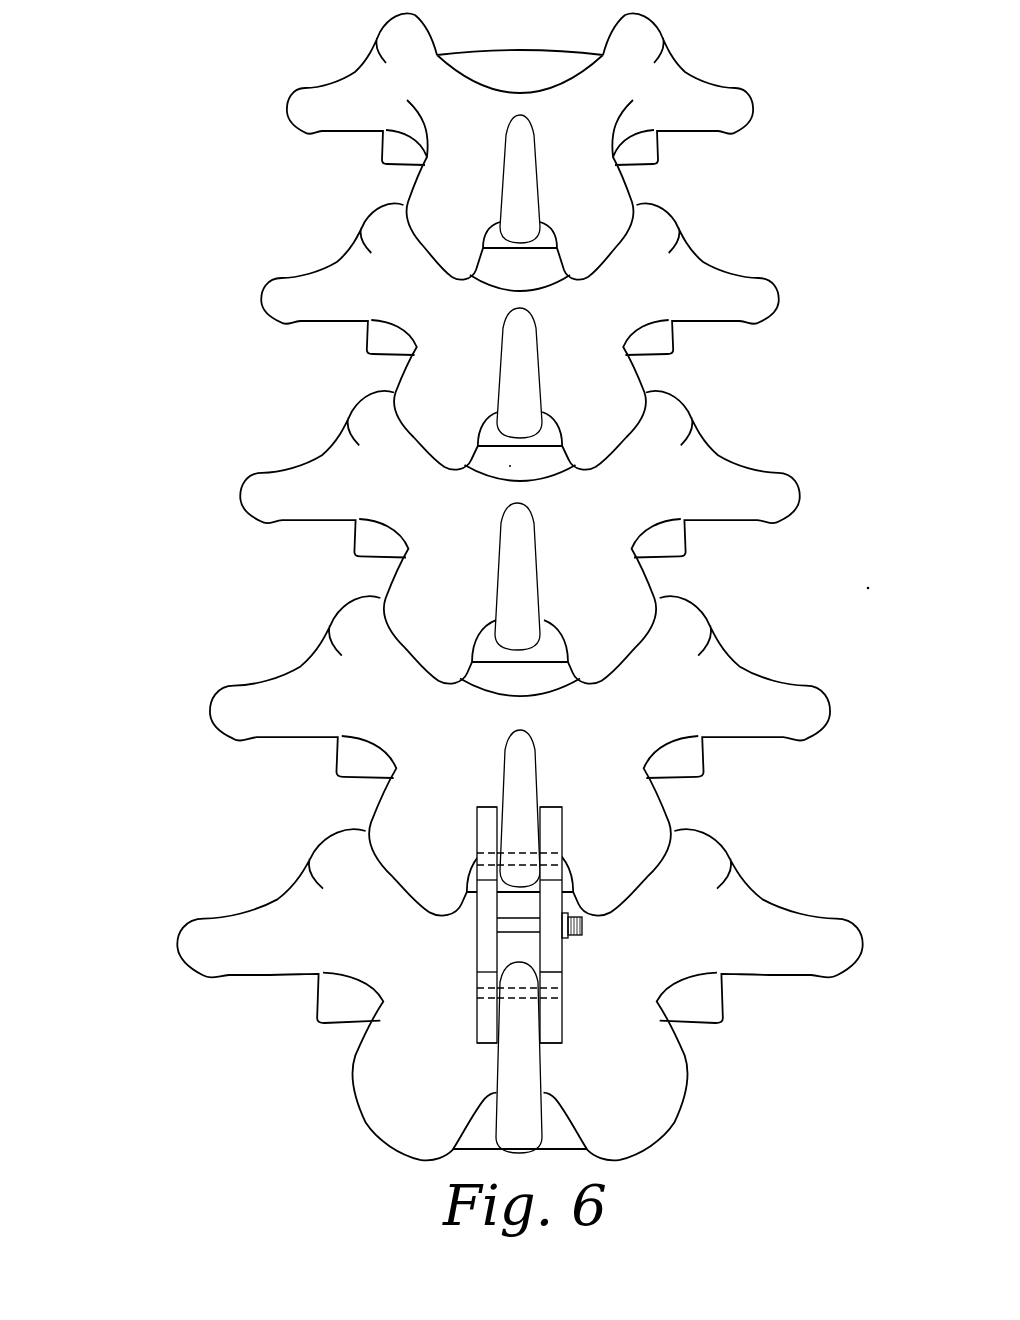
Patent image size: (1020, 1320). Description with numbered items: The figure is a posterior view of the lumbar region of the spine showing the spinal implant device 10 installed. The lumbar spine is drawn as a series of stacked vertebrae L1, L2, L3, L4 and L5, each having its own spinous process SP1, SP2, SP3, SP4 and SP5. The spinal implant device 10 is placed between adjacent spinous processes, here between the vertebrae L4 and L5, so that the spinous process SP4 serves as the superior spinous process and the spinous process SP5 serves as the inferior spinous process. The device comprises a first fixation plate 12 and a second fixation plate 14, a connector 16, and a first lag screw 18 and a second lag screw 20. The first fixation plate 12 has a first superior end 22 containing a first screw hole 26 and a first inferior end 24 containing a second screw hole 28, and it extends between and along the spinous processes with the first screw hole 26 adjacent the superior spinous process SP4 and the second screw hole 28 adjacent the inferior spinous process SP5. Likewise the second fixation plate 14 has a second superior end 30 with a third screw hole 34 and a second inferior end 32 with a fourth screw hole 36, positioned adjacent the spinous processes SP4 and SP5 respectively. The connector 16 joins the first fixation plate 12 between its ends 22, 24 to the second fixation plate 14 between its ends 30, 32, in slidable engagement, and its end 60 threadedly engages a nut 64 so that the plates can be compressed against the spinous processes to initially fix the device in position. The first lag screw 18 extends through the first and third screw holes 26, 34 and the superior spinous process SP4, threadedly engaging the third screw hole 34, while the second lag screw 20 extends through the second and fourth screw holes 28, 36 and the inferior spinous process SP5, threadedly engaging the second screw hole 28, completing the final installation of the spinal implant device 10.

The spinal implant device 10 is at (515, 939).
The first fixation plate 12 is at (554, 842).
The second fixation plate 14 is at (477, 840).
The connector 16 is at (527, 934).
The first lag screw 18 is at (522, 860).
The second lag screw 20 is at (475, 991).
The first superior end 22 is at (558, 814).
The first inferior end 24 is at (558, 1038).
The first screw hole 26 is at (580, 859).
The second screw hole 28 is at (581, 1004).
The second superior end 30 is at (477, 814).
The second inferior end 32 is at (478, 1043).
The third screw hole 34 is at (460, 853).
The fourth screw hole 36 is at (458, 1008).
The end of the connector 60 is at (583, 925).
The nut 64 is at (567, 934).
The vertebra L1 is at (140, 112).
The vertebra L2 is at (140, 300).
The vertebra L3 is at (140, 495).
The vertebra L4 is at (140, 710).
The vertebra L5 is at (140, 945).
The spinous process SP1 is at (518, 198).
The spinous process SP2 is at (528, 388).
The spinous process SP3 is at (530, 593).
The superior spinous process SP4 is at (512, 767).
The inferior spinous process SP5 is at (518, 1068).